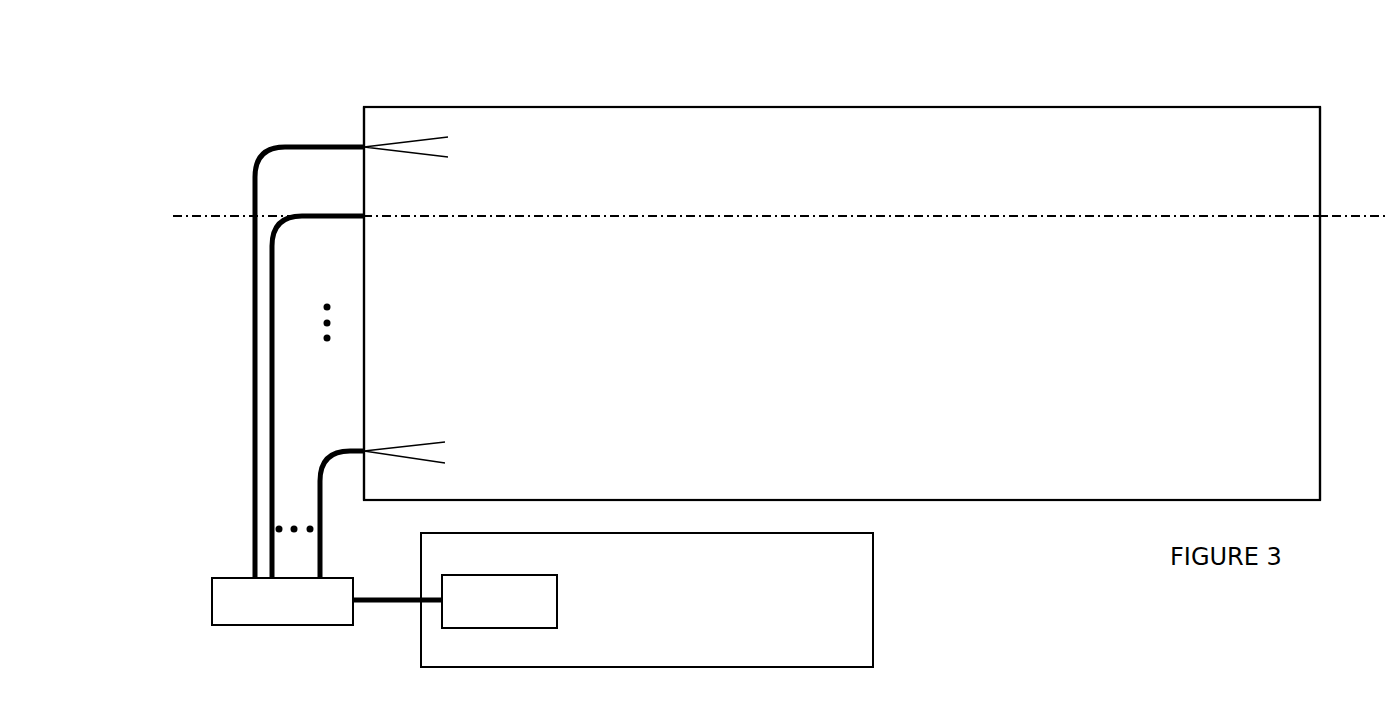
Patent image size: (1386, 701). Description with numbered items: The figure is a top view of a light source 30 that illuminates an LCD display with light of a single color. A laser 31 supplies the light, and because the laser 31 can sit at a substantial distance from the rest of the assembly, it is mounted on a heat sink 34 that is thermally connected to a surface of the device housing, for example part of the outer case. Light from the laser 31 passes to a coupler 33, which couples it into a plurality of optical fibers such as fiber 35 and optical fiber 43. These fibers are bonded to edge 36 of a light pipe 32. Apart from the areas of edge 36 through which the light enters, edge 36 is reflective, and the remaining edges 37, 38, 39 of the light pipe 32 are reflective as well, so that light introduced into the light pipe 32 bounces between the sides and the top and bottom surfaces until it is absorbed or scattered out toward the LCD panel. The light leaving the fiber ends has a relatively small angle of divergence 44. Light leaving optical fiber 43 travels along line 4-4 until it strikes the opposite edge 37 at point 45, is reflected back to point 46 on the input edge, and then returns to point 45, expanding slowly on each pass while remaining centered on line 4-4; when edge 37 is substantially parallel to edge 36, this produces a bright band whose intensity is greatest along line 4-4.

The light source 30 is at (200, 75).
The line 4- 4 is at (193, 208).
The laser 31 is at (558, 585).
The light pipe 32 is at (1153, 417).
The coupler 33 is at (212, 600).
The heat sink 34 is at (866, 594).
The optical fiber 35 is at (255, 484).
The edge 36 is at (364, 346).
The edge 37 is at (1320, 324).
The edge 38 is at (1018, 500).
The edge 39 is at (1027, 107).
The optical fiber 43 is at (275, 398).
The angle of divergence 44 is at (440, 138).
The point 45 is at (1320, 217).
The point 46 is at (364, 216).